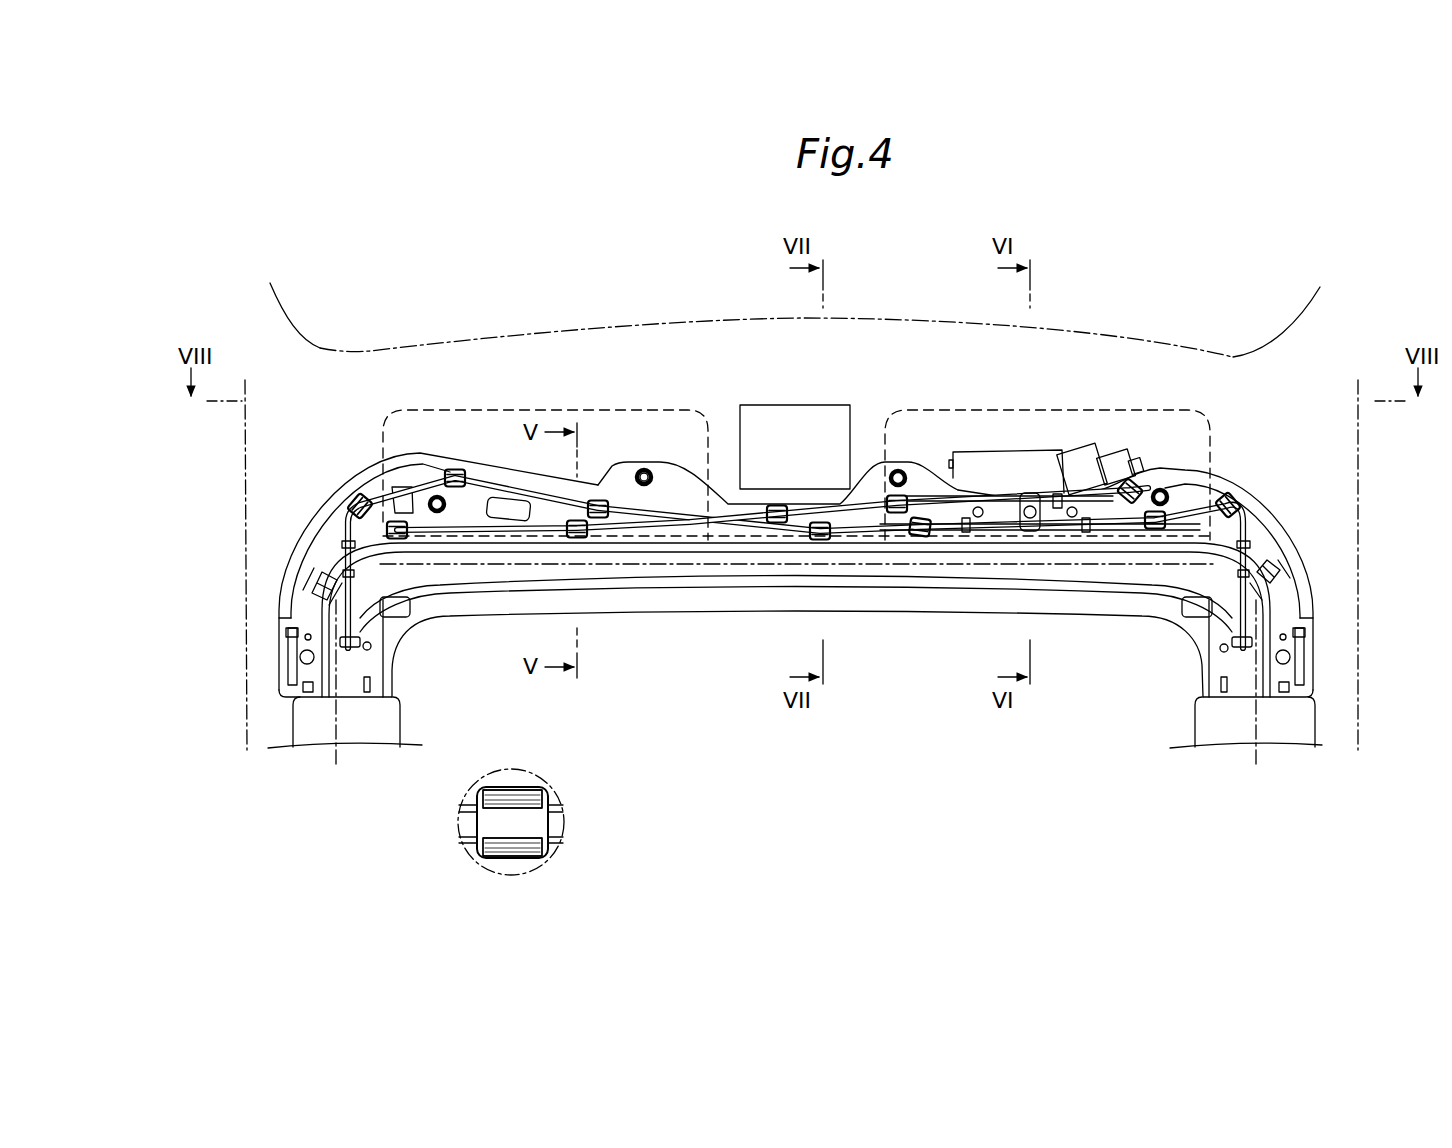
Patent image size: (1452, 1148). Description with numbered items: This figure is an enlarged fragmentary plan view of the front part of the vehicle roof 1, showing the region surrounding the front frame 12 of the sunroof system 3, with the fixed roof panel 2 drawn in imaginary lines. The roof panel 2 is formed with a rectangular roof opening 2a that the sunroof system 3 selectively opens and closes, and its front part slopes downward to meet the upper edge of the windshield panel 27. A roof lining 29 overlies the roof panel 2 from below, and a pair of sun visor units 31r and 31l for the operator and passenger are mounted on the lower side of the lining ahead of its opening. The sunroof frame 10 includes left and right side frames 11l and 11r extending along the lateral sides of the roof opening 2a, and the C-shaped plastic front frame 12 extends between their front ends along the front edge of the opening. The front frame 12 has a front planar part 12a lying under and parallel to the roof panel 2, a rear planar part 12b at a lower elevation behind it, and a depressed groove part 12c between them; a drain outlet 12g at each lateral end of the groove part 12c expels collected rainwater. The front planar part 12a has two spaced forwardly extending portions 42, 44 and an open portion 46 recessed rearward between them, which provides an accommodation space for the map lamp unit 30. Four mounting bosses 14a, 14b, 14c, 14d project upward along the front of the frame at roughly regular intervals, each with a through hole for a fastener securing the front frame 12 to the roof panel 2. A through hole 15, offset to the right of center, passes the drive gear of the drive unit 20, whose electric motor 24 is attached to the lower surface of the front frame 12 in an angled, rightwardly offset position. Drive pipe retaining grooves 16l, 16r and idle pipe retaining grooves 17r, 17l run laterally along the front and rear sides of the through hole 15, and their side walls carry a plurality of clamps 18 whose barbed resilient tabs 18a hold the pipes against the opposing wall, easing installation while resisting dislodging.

The vehicle roof 1 is at (397, 268).
The roof panel 2 is at (1103, 368).
The roof lining 29 is at (795, 320).
The windshield panel 27 is at (1272, 289).
The sunroof system 3 is at (1086, 628).
The sunroof frame 10 is at (1318, 667).
The left side frame 11l is at (363, 742).
The right side frame 11r is at (1225, 742).
The front frame 12 is at (352, 490).
The front planar part 12a is at (936, 470).
The rear planar part 12b is at (900, 604).
The groove part 12c is at (952, 584).
The drain outlet 12g is at (317, 570).
The leftmost mounting boss 14a is at (440, 494).
The second mounting boss 14b is at (648, 468).
The third mounting boss 14c is at (898, 468).
The rightmost mounting boss 14d is at (1160, 487).
The through hole 15 is at (1033, 540).
The drive pipe retaining groove 16l is at (421, 453).
The drive pipe retaining groove 16r is at (1205, 473).
The idle pipe retaining groove 17l is at (1267, 538).
The idle pipe retaining groove 17r is at (318, 543).
The clamp 18 is at (600, 499).
The resilient tab 18a is at (545, 840).
The drive unit 20 is at (1007, 445).
The electric motor 24 is at (1085, 455).
The roof opening 2a is at (640, 572).
The map lamp unit 30 is at (822, 405).
The sun visor unit 31l is at (500, 408).
The sun visor unit 31r is at (1205, 416).
The forwardly extending portion 42 is at (641, 466).
The forwardly extending portion 44 is at (925, 470).
The open portion 46 is at (735, 512).